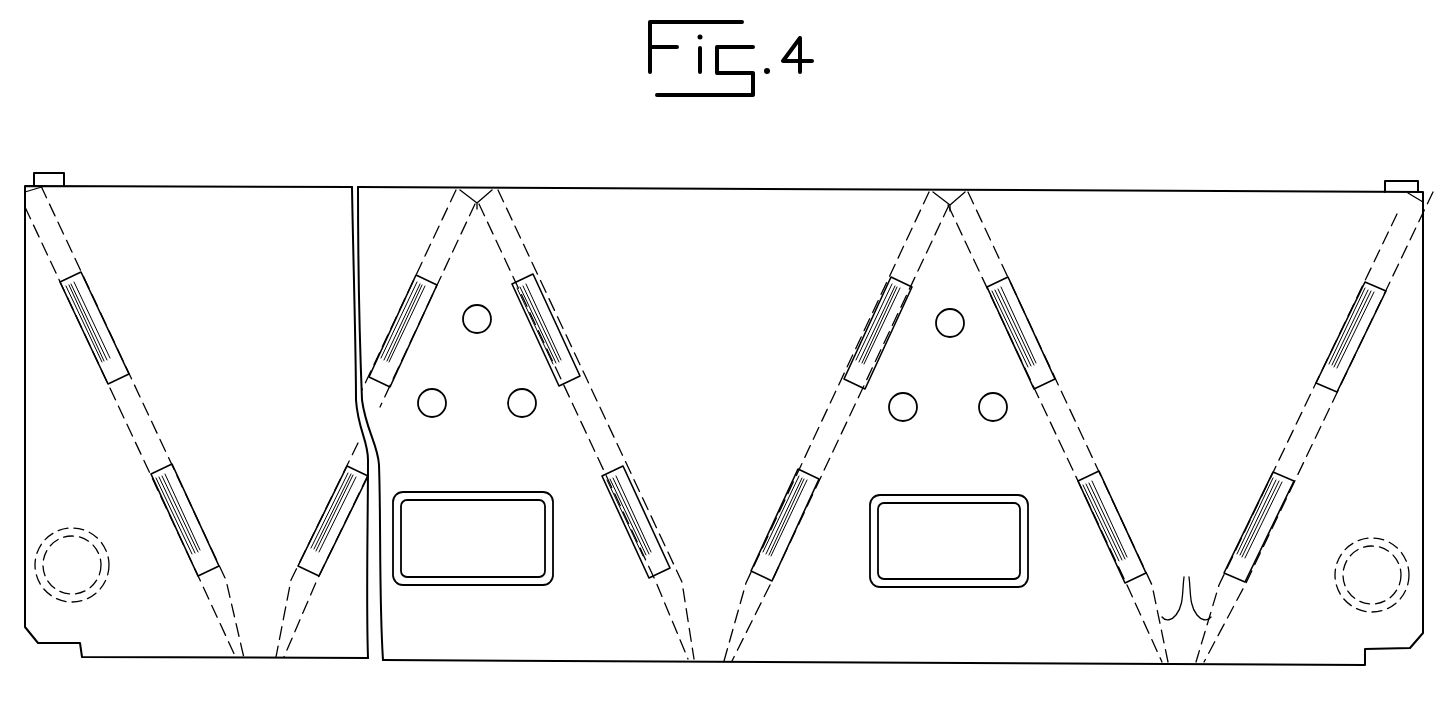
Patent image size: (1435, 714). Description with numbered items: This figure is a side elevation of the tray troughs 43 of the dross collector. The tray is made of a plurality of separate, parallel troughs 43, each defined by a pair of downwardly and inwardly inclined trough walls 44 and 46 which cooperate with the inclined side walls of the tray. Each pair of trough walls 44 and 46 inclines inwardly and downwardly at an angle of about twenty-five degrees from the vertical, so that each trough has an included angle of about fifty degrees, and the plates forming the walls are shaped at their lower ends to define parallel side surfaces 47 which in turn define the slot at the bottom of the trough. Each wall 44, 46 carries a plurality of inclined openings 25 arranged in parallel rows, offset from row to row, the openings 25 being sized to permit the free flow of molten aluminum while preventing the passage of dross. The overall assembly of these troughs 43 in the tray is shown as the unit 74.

The container blank 74 is at (858, 166).
The inclined openings 25 is at (592, 400).
The trough wall 46 is at (446, 232).
The trough wall 44 is at (518, 236).
The trough 43 is at (680, 481).
The side surface 47 is at (1186, 582).